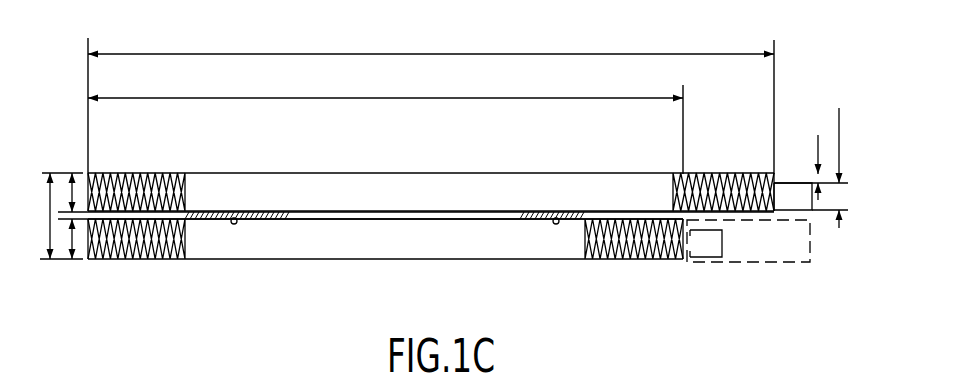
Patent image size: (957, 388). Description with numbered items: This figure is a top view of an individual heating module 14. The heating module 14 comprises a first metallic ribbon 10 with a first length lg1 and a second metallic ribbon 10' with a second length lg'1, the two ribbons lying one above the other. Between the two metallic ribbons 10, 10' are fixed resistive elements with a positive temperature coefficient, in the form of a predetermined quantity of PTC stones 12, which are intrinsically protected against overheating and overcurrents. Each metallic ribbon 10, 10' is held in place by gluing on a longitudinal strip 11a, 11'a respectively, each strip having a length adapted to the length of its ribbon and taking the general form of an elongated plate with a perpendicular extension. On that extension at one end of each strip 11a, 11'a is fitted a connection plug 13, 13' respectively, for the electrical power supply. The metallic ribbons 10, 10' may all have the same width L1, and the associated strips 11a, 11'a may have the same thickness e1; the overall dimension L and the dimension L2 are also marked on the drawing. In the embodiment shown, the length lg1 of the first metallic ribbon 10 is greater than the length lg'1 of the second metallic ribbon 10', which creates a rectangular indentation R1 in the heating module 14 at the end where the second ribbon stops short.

The first metallic ribbon 10 is at (431, 167).
The second metallic ribbon 10' is at (385, 264).
The longitudinal strip 11a is at (331, 174).
The longitudinal strip 11'a is at (385, 264).
The PTC stones 12 is at (236, 224).
The connection plug 13 is at (776, 174).
The connection plug 13' is at (693, 270).
The heating module 14 is at (115, 268).
The rectangular indentation R1 is at (810, 245).
The total thickness L is at (52, 233).
The width L1 is at (70, 187).
The end portion thickness L2 is at (828, 165).
The thickness e1 is at (807, 166).
The first length lg1 is at (431, 40).
The second length lg'1 is at (385, 86).